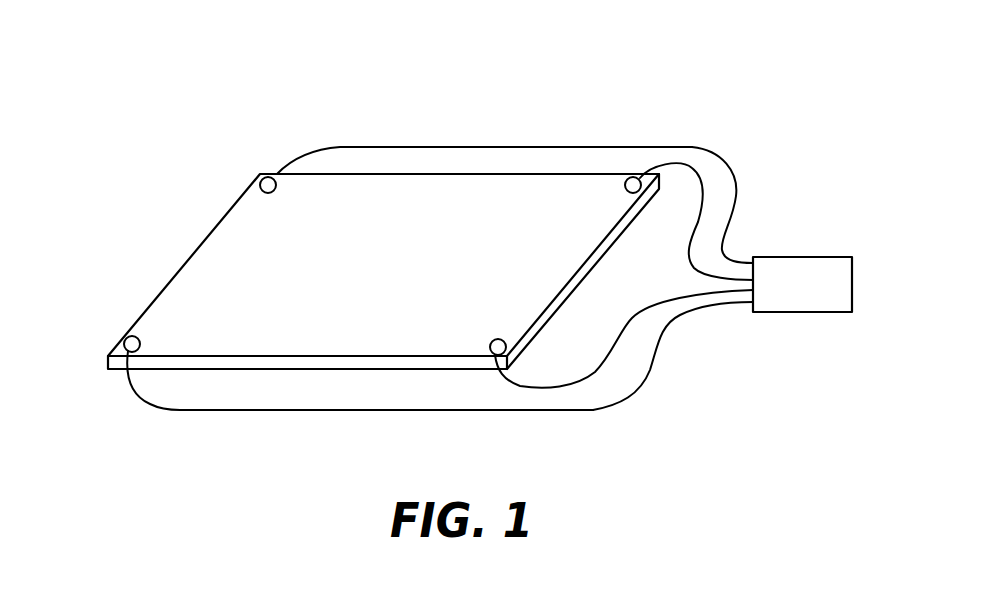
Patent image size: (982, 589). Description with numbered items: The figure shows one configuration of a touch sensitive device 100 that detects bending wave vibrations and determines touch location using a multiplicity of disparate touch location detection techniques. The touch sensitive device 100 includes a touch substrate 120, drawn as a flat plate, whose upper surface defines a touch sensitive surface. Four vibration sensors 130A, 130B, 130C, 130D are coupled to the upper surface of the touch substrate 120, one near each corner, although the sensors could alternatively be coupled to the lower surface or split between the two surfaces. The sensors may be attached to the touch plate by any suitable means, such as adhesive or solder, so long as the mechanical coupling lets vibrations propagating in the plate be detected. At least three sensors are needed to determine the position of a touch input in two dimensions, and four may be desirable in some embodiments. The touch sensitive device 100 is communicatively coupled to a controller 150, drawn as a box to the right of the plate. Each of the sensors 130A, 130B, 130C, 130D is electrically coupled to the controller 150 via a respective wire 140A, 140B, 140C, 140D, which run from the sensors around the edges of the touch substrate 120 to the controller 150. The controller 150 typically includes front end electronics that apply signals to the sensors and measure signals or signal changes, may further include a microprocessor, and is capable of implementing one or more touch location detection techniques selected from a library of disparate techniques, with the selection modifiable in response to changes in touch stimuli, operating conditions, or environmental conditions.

The touch sensitive device 100 is at (650, 54).
The touch substrate 120 is at (533, 222).
The vibration sensor 130A is at (262, 176).
The vibration sensor 130B is at (626, 181).
The vibration sensor 130C is at (119, 346).
The vibration sensor 130D is at (491, 349).
The wire 140A is at (352, 146).
The wire 140B is at (695, 147).
The wire 140C is at (177, 410).
The wire 140D is at (590, 376).
The controller 150 is at (797, 257).